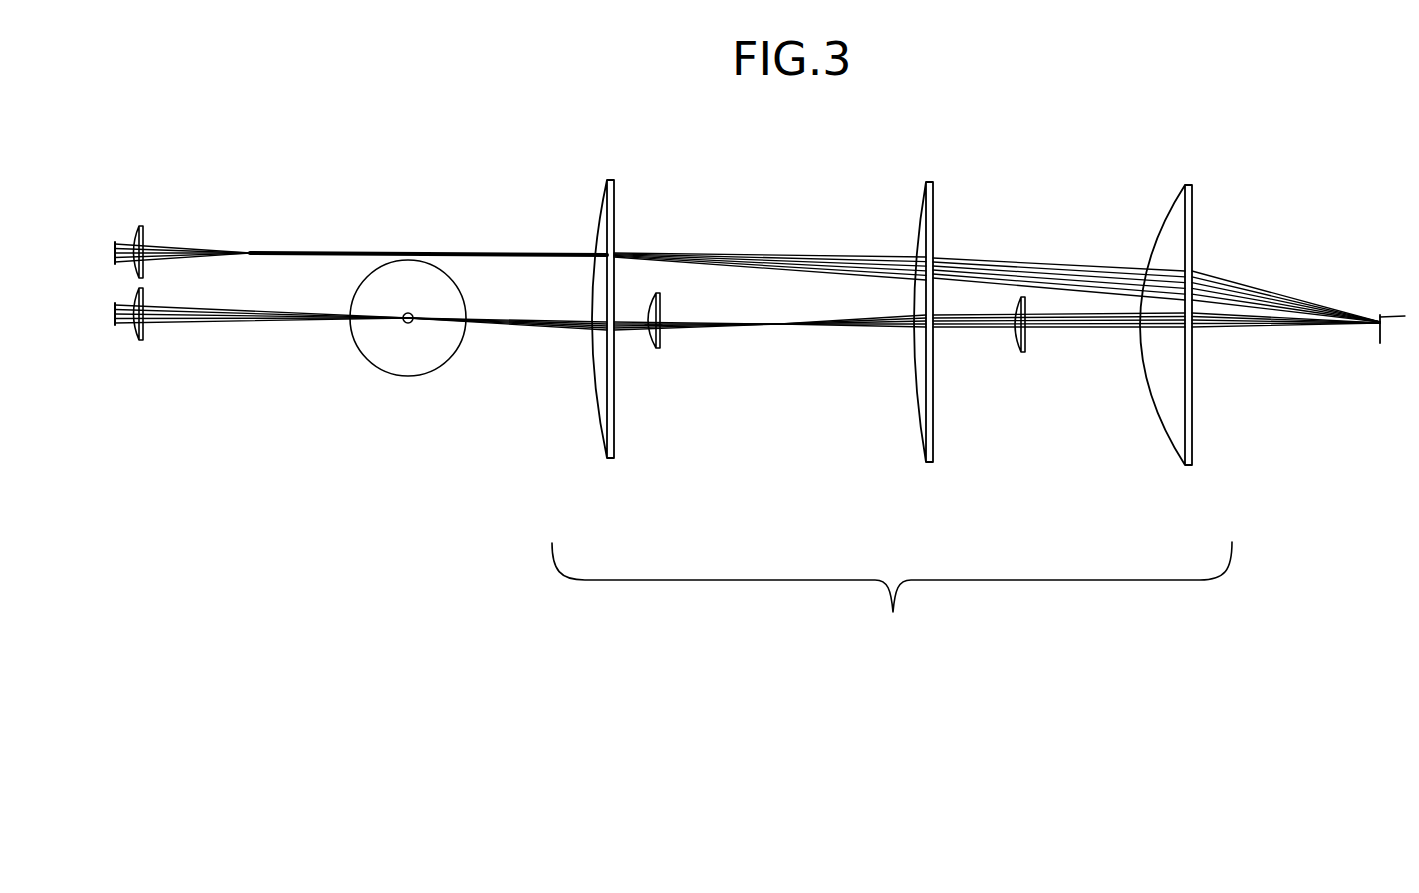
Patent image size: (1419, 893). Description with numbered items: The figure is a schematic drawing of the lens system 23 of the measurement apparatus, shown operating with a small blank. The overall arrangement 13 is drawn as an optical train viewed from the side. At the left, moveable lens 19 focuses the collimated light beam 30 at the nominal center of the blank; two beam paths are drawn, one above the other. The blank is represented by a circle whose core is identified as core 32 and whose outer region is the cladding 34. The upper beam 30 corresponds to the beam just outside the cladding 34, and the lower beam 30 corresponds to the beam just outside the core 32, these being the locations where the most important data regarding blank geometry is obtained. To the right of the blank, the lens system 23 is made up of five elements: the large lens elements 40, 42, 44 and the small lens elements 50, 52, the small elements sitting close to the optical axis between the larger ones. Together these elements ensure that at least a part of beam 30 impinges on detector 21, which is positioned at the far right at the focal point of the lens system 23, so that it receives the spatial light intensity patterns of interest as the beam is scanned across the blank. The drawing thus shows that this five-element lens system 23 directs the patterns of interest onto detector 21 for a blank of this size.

The optical system 13 is at (325, 452).
The moveable lens 19 is at (143, 232).
The detector 21 is at (1382, 333).
The lens system 23 is at (892, 593).
The collimated light beam 30 is at (268, 252).
The core 32 is at (407, 323).
The cladding 34 is at (437, 350).
The large lens element 40 is at (614, 435).
The large lens element 42 is at (933, 437).
The large lens element 44 is at (1192, 437).
The small lens element 50 is at (660, 303).
The small lens element 52 is at (1027, 338).